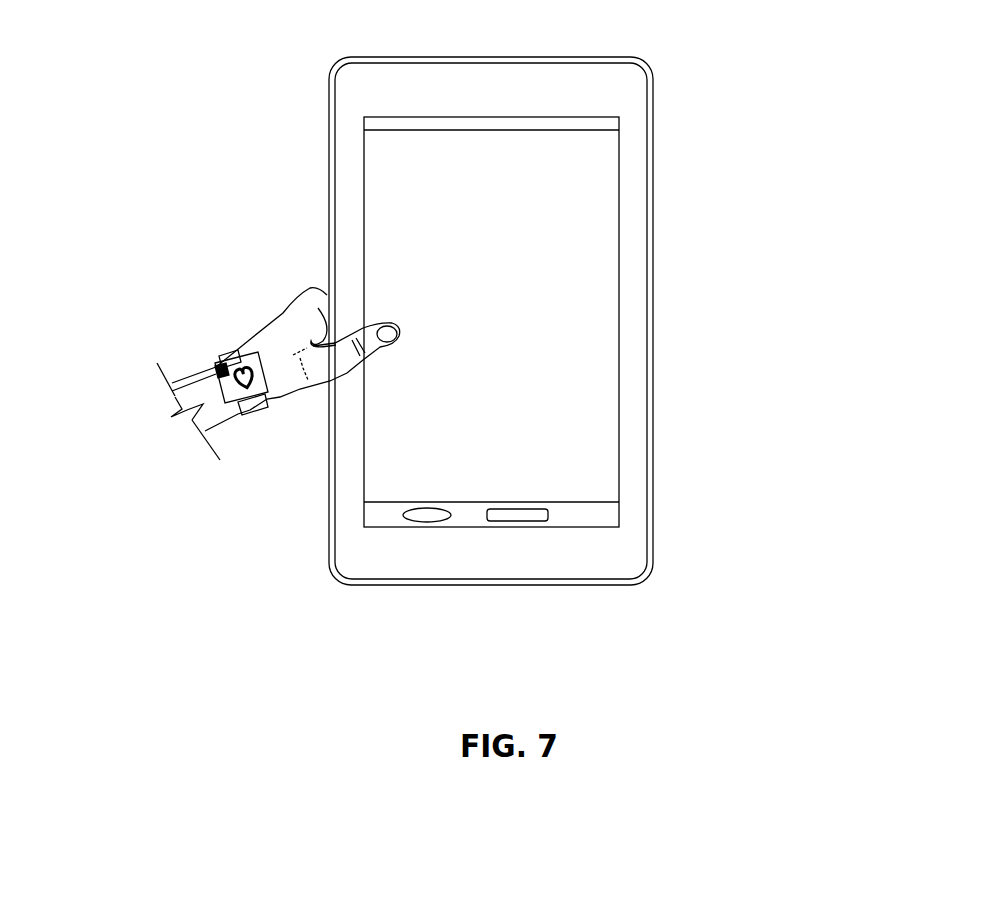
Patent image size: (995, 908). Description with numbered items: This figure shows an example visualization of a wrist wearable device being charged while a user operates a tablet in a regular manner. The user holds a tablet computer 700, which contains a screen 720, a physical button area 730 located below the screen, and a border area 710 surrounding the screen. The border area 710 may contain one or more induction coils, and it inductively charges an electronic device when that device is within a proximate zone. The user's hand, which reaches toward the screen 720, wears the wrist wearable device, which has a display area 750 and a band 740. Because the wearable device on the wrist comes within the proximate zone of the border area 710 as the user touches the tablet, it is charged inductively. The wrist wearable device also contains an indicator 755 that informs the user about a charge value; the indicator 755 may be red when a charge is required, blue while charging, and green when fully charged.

The tablet computer 700 is at (633, 62).
The border area 710 is at (352, 233).
The screen 720 is at (398, 463).
The physical button area 730 is at (400, 517).
The band 740 is at (237, 355).
The display area 750 is at (240, 414).
The indicator 755 is at (175, 393).